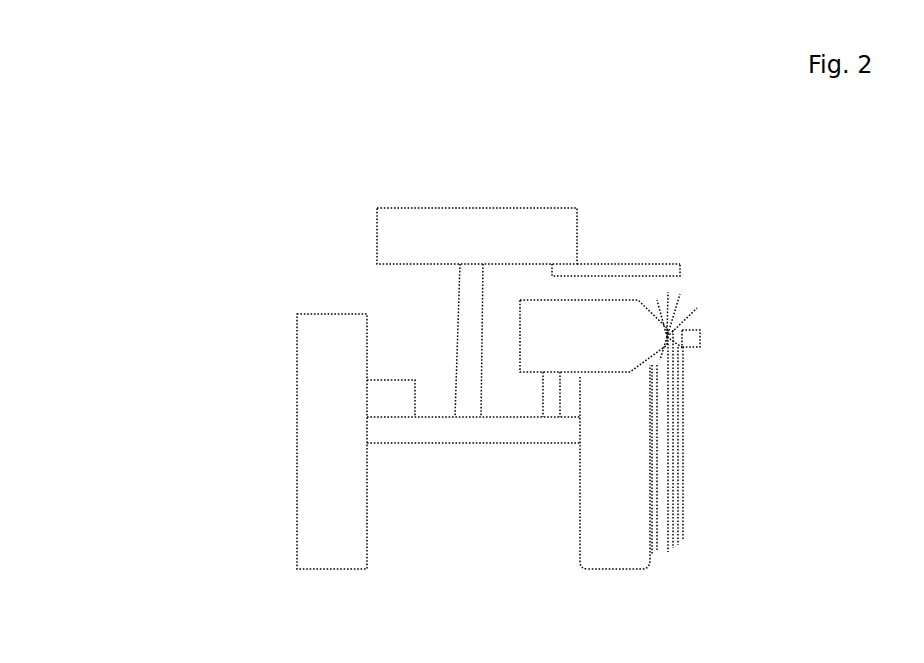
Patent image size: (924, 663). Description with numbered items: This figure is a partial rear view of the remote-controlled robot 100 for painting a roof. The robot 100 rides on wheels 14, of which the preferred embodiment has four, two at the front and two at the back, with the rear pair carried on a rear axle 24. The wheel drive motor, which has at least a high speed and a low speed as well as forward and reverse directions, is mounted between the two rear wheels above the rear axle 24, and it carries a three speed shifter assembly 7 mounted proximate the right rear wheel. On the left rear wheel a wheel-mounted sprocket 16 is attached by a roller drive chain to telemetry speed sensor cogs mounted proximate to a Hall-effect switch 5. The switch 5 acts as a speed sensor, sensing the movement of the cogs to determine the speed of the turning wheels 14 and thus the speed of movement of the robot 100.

The four wheel drive robot 100 is at (225, 248).
The Hall-effect switch 5 is at (668, 262).
The wheel-mounted sprocket 16 is at (668, 308).
The three speed shifter assembly 7 is at (382, 397).
The rear axle 24 is at (513, 430).
The wheels 14 is at (605, 552).